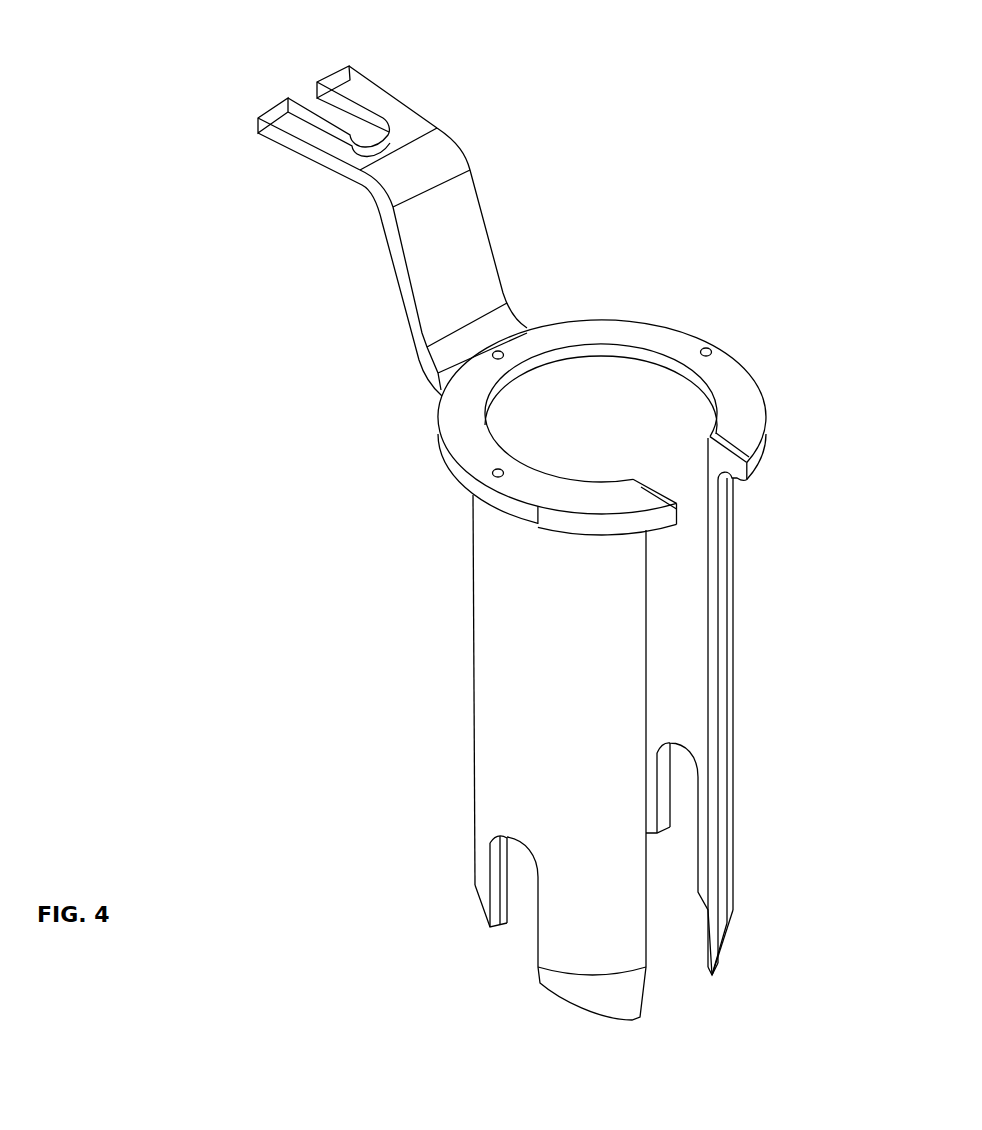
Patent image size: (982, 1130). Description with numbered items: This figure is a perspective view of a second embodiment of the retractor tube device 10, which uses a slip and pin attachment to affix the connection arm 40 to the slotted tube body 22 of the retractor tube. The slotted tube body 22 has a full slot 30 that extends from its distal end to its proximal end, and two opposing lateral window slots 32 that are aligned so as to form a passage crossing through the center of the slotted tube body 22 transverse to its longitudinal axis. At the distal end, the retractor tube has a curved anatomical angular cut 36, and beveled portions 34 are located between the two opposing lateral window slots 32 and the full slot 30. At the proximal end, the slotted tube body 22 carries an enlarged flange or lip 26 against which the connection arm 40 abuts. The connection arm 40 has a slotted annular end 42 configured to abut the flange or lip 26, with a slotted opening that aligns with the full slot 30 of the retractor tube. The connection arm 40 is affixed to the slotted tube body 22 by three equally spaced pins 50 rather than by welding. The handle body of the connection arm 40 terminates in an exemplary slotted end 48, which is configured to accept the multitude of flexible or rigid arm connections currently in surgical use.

The retractor tube device 10 is at (133, 90).
The slotted tube body 22 is at (502, 609).
The flange or lip 26 is at (768, 458).
The full slot 30 is at (678, 943).
The lateral window slots 32 is at (513, 928).
The beveled portions 34 is at (604, 998).
The curved anatomical angular cut 36 is at (470, 893).
The connection arm 40 is at (486, 213).
The slotted annular end 42 is at (615, 328).
The slotted end 48 is at (288, 97).
The pins 50 is at (705, 345).